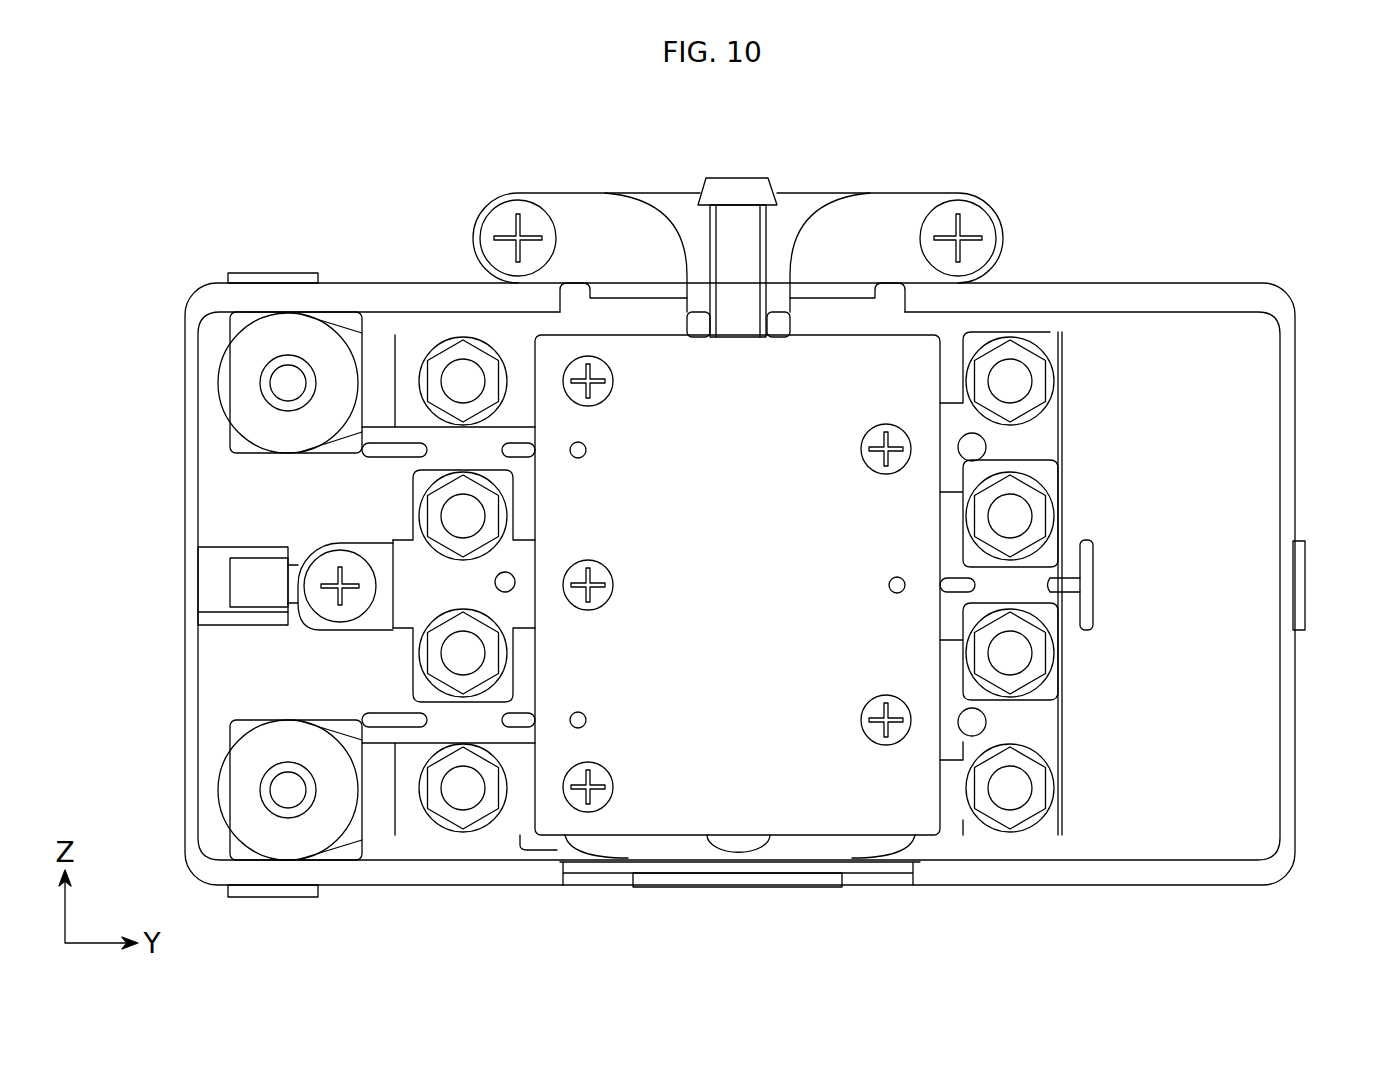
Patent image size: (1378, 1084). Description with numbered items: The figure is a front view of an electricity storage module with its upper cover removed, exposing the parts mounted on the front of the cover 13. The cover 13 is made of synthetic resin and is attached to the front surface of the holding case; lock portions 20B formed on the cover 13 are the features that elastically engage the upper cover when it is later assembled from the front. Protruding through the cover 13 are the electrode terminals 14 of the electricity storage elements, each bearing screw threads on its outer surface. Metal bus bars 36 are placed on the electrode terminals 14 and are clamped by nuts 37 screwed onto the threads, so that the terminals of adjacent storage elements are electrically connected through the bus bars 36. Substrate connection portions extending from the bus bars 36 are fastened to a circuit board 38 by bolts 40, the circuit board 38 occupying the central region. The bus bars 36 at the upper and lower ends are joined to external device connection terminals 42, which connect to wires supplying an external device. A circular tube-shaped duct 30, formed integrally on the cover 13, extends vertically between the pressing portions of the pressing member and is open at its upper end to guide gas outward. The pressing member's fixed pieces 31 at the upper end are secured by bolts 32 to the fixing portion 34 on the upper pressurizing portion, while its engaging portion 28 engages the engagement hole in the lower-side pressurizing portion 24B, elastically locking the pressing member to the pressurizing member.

The cover 13 is at (1203, 333).
The electrode terminal 14 is at (465, 373).
The lock portion 20B is at (272, 273).
The lower-side pressurizing portion 24B is at (883, 866).
The engaging portion 28 is at (725, 887).
The duct 30 is at (752, 231).
The fixed piece 31 is at (585, 230).
The bolt 32 is at (505, 225).
The fixing portion 34 is at (800, 221).
The bus bar 36 is at (404, 371).
The nut 37 is at (438, 367).
The circuit board 38 is at (807, 812).
The bolt 40 is at (600, 372).
The external device connection terminal 42 is at (283, 383).